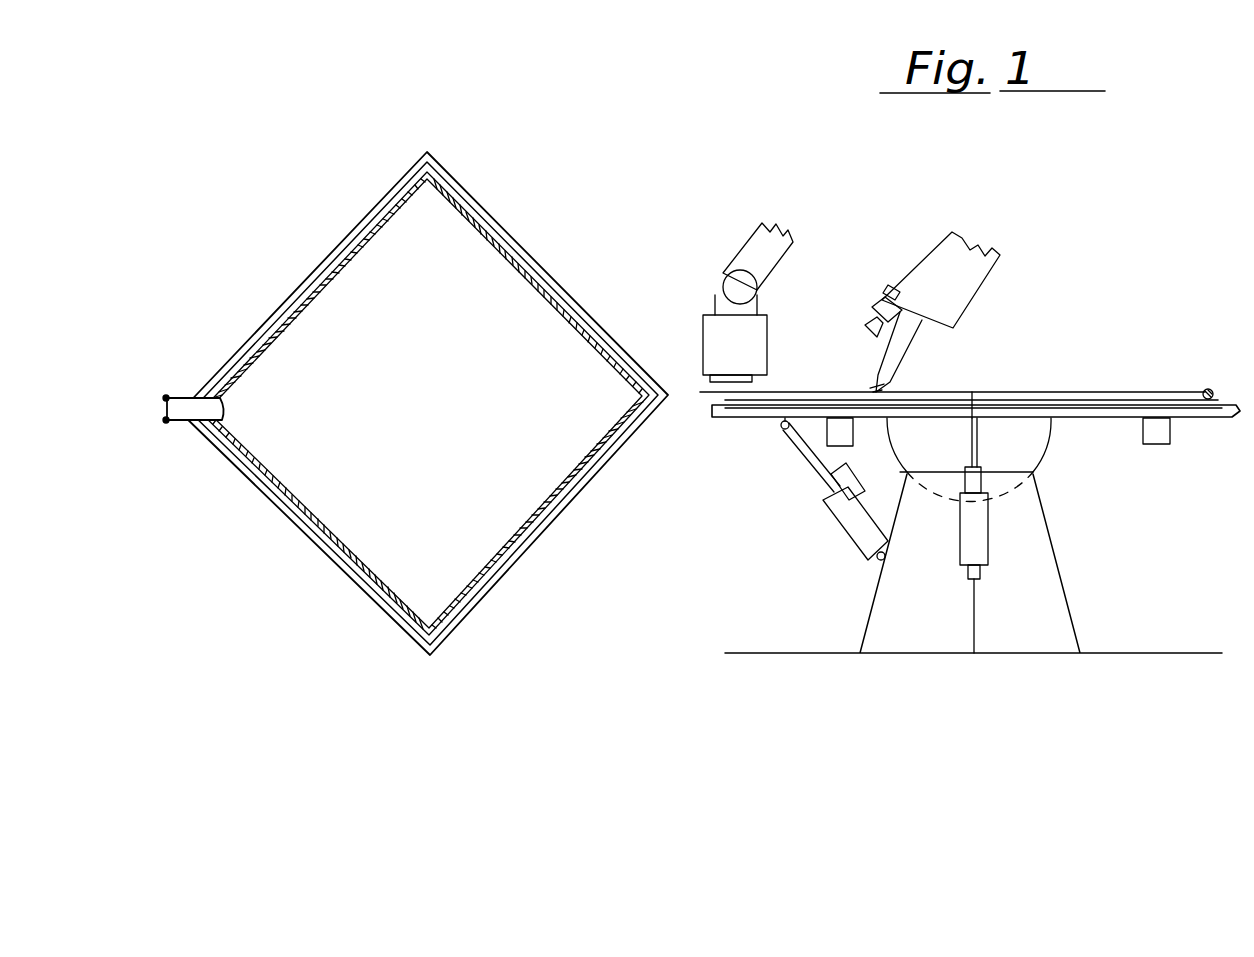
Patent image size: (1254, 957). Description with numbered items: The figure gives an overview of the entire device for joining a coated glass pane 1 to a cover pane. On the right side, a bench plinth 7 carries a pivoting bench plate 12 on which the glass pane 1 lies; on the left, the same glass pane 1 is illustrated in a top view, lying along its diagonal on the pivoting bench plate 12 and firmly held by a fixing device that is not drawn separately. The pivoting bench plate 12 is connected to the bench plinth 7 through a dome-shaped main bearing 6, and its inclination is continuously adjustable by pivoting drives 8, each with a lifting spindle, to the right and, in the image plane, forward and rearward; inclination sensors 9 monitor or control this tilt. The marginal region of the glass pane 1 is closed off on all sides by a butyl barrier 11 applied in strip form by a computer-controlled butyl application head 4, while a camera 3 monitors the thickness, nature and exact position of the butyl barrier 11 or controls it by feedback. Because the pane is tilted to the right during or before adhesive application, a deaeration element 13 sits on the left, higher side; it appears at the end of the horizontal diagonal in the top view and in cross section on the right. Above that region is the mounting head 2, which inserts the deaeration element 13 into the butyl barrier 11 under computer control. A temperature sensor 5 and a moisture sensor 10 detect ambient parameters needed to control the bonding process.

The glass pane 1 is at (405, 285).
The mounting head for the deaeration element 2 is at (723, 348).
The camera for monitoring the butyl application 3 is at (877, 300).
The butyl application head 4 is at (918, 298).
The temperature sensor 5 is at (1163, 432).
The main bearing for the pivoting bench 6 is at (1047, 448).
The bench plinth 7 is at (1067, 595).
The pivoting drive with lifting spindle 8 is at (972, 533).
The inclination sensor 9 is at (853, 522).
The moisture sensor 10 is at (837, 443).
The butyl barrier 11 is at (783, 395).
The pivoting bench plate with fixing device 12 is at (765, 418).
The deaeration element 13 is at (648, 383).